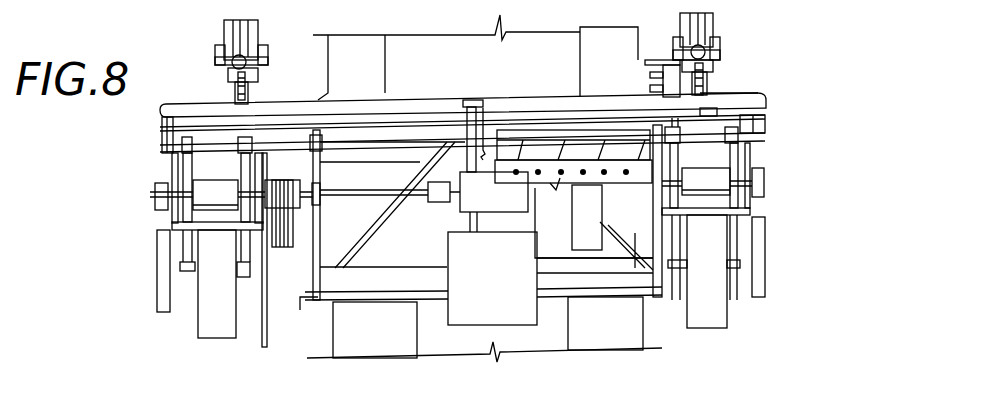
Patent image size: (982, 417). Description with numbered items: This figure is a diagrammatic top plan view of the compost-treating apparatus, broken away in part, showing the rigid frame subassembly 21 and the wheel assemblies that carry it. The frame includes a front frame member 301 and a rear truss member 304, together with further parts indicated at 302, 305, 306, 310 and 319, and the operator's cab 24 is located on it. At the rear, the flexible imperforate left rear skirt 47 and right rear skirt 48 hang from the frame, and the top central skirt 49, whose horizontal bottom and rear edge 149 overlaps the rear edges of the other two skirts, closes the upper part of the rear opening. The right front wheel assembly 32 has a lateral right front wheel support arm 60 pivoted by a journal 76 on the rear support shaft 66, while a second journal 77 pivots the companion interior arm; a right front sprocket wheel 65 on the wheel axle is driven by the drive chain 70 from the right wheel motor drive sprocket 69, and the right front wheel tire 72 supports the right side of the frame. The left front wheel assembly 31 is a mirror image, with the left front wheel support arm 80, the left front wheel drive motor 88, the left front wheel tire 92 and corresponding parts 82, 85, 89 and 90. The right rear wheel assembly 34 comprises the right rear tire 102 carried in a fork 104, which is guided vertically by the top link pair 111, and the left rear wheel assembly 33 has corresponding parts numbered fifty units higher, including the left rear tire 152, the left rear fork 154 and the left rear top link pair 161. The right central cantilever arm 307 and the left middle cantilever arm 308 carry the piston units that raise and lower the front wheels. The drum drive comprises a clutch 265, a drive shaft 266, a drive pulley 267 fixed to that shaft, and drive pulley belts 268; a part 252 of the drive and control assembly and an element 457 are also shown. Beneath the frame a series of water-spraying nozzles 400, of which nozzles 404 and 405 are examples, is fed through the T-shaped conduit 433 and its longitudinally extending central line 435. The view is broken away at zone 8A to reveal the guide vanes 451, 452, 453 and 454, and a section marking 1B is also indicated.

The break-away zone 8A is at (516, 122).
The rigid frame subassembly 21 is at (603, 293).
The cab 24 is at (448, 265).
The left front wheel assembly 31 is at (112, 162).
The right front wheel assembly 32 is at (815, 142).
The left rear wheel assembly 33 is at (175, 22).
The right rear wheel assembly 34 is at (768, 12).
The left rear skirt 47 is at (368, 97).
The right rear skirt 48 is at (633, 97).
The top central skirt 49 is at (407, 93).
The right front lateral wheel support arm 60 is at (733, 160).
The right front sprocket wheel 65 is at (765, 246).
The rear support shaft 66 is at (279, 112).
The right wheel motor drive sprocket 69 is at (764, 187).
The drive chain 70 is at (758, 208).
The right front wheel tire 72 is at (700, 328).
The journal 76 is at (750, 135).
The journal 77 is at (675, 113).
The left front wheel support arm 80 is at (172, 163).
The plate 82 is at (175, 270).
The plate 85 is at (157, 285).
The left front wheel drive motor 88 is at (228, 188).
The block 89 is at (155, 198).
The rod 90 is at (160, 220).
The left front wheel tire 92 is at (218, 338).
The right rear tire 102 is at (711, 21).
The fork 104 is at (714, 50).
The top rear right wheel link pair 111 is at (709, 82).
The bottom and rear edge of top central skirt 149 is at (437, 97).
The left rear tire 152 is at (228, 28).
The left rear fork 154 is at (229, 62).
The left rear top link pair 161 is at (234, 93).
The block 252 is at (588, 217).
The clutch 265 is at (440, 202).
The drive shaft 266 is at (378, 196).
The drive pulley 267 is at (307, 190).
The drive pulley belts 268 is at (252, 270).
The frame member 301 is at (382, 296).
The bracket 302 is at (306, 312).
The rear truss member 304 is at (340, 120).
The plate end 305 is at (737, 108).
The top plate 306 is at (178, 122).
The right central cantilever arm 307 is at (713, 218).
The left middle cantilever arm 308 is at (171, 326).
The plate 310 is at (162, 128).
The end block 319 is at (766, 121).
The water-spraying nozzles 400 is at (515, 174).
The water-spraying nozzle 404 is at (600, 175).
The water-spraying nozzle 405 is at (627, 174).
The T-shaped conduit 433 is at (272, 103).
The central line 435 is at (467, 107).
The guide vane 451 is at (530, 160).
The guide vane 452 is at (572, 160).
The guide vane 453 is at (600, 160).
The guide vane 454 is at (625, 160).
The bracket 457 is at (483, 288).
The section line 1B is at (157, 273).